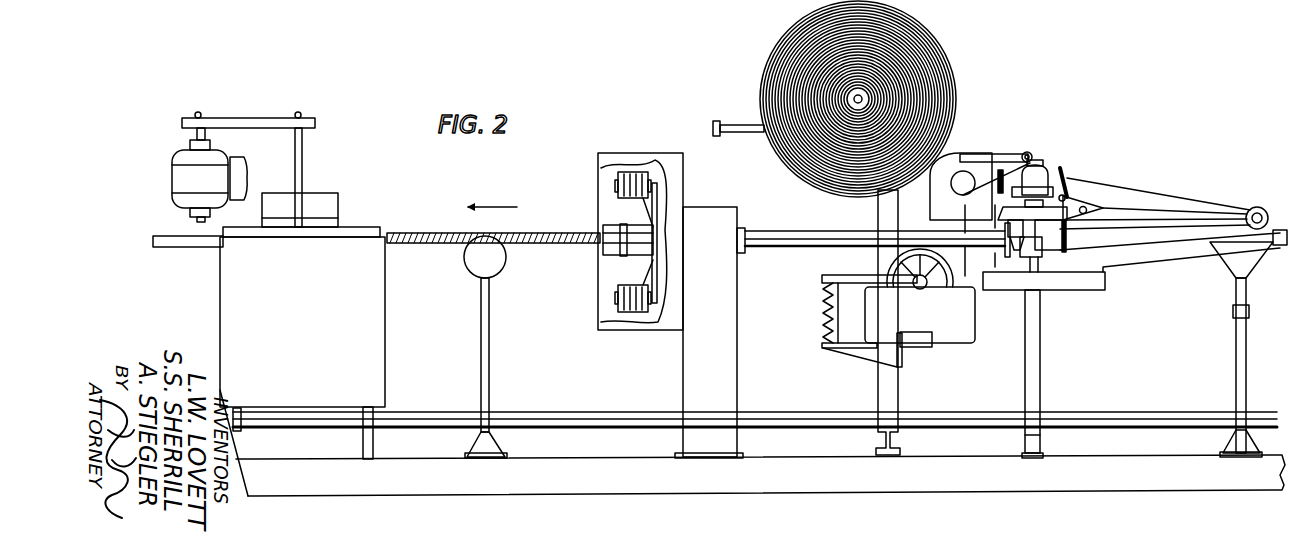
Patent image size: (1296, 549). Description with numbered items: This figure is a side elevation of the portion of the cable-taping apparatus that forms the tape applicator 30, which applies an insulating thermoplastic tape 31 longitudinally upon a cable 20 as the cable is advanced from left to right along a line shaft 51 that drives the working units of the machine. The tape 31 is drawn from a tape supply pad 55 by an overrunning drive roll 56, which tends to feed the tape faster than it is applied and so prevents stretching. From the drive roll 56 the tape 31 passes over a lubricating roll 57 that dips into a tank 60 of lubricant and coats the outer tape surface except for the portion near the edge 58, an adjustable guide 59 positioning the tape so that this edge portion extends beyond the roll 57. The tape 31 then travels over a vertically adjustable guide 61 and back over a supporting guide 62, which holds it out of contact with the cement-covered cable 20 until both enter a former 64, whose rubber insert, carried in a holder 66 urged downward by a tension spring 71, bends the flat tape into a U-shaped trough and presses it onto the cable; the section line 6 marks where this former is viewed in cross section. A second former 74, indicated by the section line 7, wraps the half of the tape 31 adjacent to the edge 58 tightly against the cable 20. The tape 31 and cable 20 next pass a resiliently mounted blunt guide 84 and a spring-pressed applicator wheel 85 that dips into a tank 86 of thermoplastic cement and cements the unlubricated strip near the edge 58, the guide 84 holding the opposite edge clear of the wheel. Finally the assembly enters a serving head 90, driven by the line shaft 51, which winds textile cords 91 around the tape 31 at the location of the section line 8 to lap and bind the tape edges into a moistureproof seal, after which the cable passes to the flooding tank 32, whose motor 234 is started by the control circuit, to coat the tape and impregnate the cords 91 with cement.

The cable 20 is at (1279, 228).
The tape applicator 30 is at (988, 150).
The insulating tape 31 is at (1108, 186).
The flooding tank 32 is at (313, 189).
The line shaft 51 is at (550, 412).
The tape supply pad 55 is at (935, 55).
The overrunning drive roll 56 is at (956, 155).
The lubricating roll 57 is at (1034, 164).
The edge of the tape 58 is at (1163, 252).
The adjustable guide 59 is at (1069, 190).
The tank 60 is at (1052, 180).
The vertically adjustable guide 61 is at (1143, 211).
The supporting guide 62 is at (1254, 207).
The former 64 is at (1065, 267).
The holder 66 is at (1048, 232).
The tension spring 71 is at (1057, 228).
The former 74 is at (1009, 259).
The blunt guide 84 is at (962, 243).
The applicator wheel 85 is at (887, 268).
The tank 86 is at (955, 340).
The serving head 90 is at (649, 149).
The textile cords 91 is at (612, 212).
The motor 234 is at (175, 152).
The section line 6- 6 is at (1071, 225).
The section line 7- 7 is at (993, 212).
The section line 8- 8 is at (963, 212).